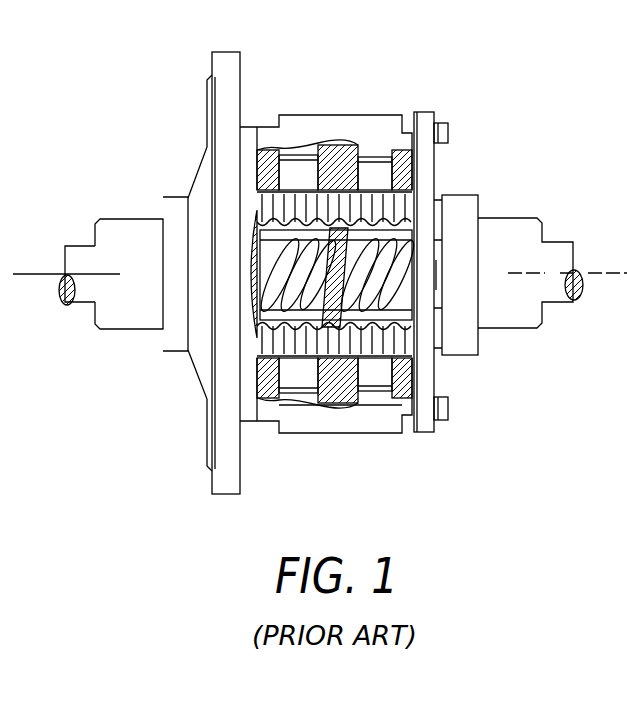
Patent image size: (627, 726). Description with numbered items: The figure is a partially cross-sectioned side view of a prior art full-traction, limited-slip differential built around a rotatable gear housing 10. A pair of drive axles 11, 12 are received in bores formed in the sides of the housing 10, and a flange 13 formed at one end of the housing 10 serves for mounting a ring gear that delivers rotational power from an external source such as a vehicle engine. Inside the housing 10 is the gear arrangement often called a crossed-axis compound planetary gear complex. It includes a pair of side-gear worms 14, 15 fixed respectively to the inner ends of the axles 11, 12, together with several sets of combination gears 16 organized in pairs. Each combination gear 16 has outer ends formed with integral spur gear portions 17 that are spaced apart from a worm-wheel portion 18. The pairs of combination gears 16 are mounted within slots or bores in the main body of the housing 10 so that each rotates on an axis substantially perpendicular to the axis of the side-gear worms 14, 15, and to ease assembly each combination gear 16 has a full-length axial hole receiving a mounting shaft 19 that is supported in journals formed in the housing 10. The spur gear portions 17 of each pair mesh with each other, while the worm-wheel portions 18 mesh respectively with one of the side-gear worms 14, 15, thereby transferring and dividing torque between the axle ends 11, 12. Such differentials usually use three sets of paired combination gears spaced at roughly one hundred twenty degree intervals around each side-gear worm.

The gear housing 10 is at (377, 167).
The drive axle 11 is at (70, 248).
The drive axle 12 is at (575, 265).
The flange 13 is at (240, 80).
The side-gear worm 14 is at (247, 277).
The side-gear worm 15 is at (437, 277).
The combination gear 16 is at (400, 358).
The spur gear portion 17 is at (413, 205).
The worm-wheel portion 18 is at (447, 247).
The mounting shaft 19 is at (298, 173).